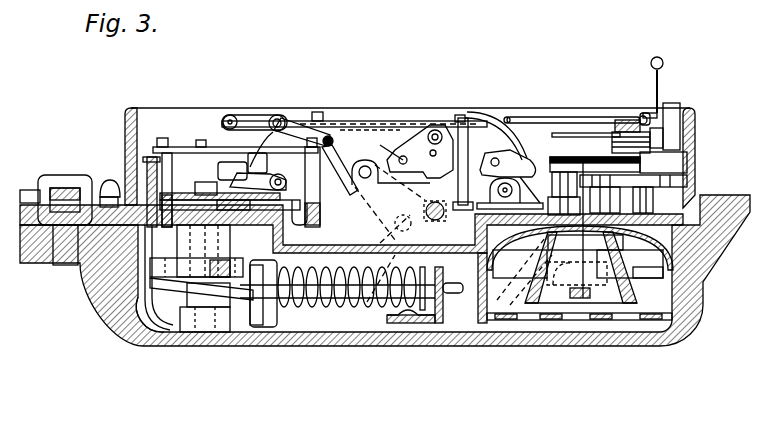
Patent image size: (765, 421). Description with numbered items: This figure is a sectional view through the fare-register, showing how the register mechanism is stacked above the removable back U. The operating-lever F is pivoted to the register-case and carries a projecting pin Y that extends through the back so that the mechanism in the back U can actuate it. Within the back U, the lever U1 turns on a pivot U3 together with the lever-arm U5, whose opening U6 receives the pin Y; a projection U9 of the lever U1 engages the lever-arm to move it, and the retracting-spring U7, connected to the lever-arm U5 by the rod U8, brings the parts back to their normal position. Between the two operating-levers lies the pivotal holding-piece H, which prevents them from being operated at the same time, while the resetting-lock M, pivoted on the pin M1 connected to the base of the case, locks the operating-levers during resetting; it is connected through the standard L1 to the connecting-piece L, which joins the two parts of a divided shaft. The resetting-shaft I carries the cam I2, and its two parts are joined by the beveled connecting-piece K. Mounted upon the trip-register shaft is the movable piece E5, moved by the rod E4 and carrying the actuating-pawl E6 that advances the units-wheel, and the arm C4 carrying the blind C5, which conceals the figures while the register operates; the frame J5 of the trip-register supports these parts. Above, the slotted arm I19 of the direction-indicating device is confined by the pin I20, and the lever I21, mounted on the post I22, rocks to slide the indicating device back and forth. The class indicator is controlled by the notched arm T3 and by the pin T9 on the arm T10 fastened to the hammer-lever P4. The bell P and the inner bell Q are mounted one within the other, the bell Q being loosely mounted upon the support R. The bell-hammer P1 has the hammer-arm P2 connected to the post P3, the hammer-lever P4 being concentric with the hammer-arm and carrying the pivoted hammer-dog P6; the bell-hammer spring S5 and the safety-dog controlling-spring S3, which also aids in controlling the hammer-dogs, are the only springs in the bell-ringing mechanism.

The removable back U is at (305, 347).
The arm T10 is at (697, 140).
The lever I21 is at (335, 121).
The second arm T3 is at (556, 117).
The post I22 is at (317, 112).
The slotted arm I19 is at (365, 130).
The pin I20 is at (507, 117).
The rod E4 is at (299, 116).
The holding-piece H is at (187, 157).
The resetting-lock M is at (183, 153).
The pin M1 is at (145, 165).
The cam I2 is at (201, 147).
The connecting-piece L is at (322, 215).
The standard L1 is at (343, 170).
The frame J5 is at (385, 160).
The resetting-shaft I is at (425, 208).
The actuating-pawl E6 is at (412, 147).
The movable piece E5 is at (460, 150).
The blind C5 is at (478, 112).
The arm C4 is at (515, 158).
The hammer-arm P2 is at (584, 157).
The bell-hammer spring S5 is at (610, 132).
The post P3 is at (630, 120).
The pin T9 is at (672, 105).
The hammer-dog P6 is at (697, 165).
The hammer-lever P4 is at (688, 182).
The controlling-spring S3 is at (580, 248).
The inner bell Q is at (632, 303).
The support R is at (580, 303).
The bell P is at (663, 267).
The bell-hammer P1 is at (547, 303).
The connecting-piece K is at (438, 222).
The operating-lever F is at (233, 248).
The retracting-spring U7 is at (338, 310).
The rod U8 is at (453, 293).
The projection U9 is at (204, 332).
The lever U1 is at (232, 332).
The pivot U3 is at (141, 268).
The lever-arm U5 is at (217, 230).
The opening U6 is at (187, 255).
The projecting pin Y is at (150, 318).